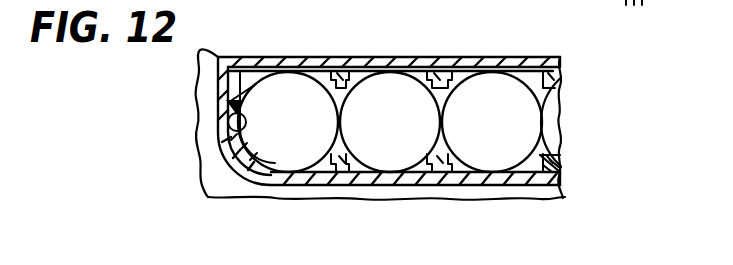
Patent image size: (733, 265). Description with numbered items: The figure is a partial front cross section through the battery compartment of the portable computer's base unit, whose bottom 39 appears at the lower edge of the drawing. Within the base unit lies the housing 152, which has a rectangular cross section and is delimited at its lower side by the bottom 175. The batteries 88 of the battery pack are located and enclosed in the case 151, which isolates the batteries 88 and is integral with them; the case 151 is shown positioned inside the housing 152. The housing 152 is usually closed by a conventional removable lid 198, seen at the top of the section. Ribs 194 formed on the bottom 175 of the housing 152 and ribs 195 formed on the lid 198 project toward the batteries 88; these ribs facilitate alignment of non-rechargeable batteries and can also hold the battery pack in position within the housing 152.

The bottom 39 is at (195, 93).
The housing 152 is at (232, 140).
The batteries 88 is at (291, 162).
The ribs 194 is at (345, 165).
The ribs 195 is at (532, 67).
The lid 198 is at (560, 58).
The case 151 is at (557, 148).
The bottom 175 is at (560, 184).